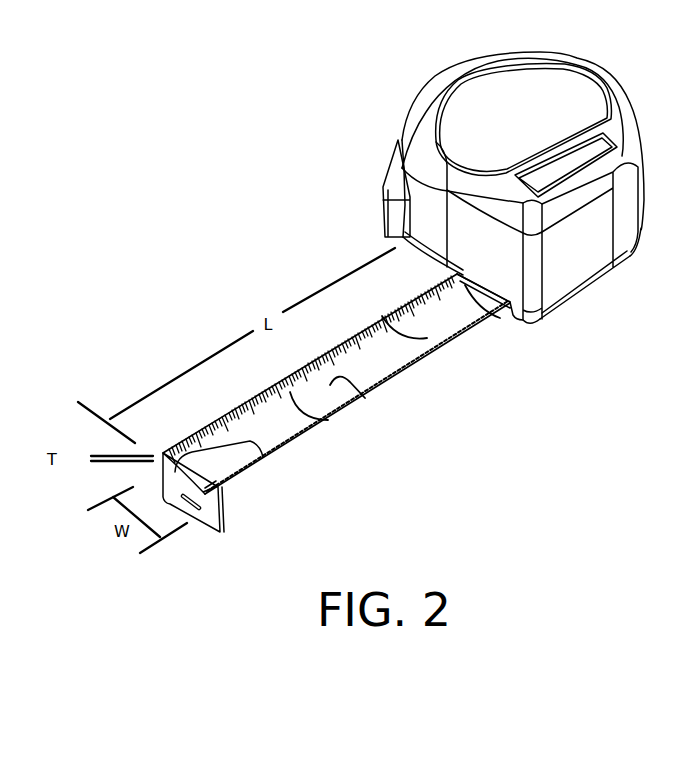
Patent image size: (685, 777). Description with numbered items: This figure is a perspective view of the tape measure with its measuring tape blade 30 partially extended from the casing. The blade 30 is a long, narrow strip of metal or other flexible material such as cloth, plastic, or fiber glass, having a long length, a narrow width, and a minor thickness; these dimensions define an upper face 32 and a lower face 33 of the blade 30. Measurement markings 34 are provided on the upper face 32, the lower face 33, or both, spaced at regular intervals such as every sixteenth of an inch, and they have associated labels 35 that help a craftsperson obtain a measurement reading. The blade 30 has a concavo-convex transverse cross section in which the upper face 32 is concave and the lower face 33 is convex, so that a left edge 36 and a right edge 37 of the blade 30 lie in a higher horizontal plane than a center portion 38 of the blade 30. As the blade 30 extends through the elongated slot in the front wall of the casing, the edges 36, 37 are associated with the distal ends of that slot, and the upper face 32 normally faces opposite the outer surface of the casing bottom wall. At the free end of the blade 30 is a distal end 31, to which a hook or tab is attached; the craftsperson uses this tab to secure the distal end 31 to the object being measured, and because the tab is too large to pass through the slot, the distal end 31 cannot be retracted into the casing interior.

The measuring tape blade 30 is at (438, 470).
The distal end 31 is at (214, 481).
The upper face 32 is at (256, 398).
The lower face 33 is at (254, 483).
The measurement markings 34 is at (456, 334).
The labels 35 is at (385, 333).
The left edge 36 is at (395, 380).
The right edge 37 is at (353, 336).
The center portion 38 is at (360, 390).